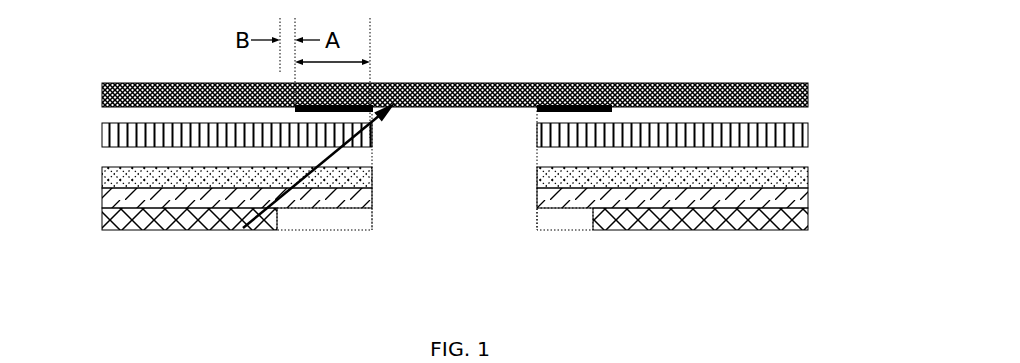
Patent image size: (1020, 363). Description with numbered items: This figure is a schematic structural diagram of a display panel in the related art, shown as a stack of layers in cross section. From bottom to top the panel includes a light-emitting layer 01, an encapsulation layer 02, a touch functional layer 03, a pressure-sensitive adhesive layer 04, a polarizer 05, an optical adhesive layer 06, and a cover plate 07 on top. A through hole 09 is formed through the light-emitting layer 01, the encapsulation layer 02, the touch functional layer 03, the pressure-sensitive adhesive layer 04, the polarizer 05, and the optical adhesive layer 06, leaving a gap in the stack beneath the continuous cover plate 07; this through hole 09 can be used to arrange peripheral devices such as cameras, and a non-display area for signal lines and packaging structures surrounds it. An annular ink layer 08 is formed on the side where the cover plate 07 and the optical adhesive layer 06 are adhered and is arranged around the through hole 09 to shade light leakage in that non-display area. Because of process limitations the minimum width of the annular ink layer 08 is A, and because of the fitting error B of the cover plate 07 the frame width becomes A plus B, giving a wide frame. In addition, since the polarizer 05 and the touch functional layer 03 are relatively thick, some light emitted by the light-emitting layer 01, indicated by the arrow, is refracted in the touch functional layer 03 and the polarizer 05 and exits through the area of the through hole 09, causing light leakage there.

The light-emitting layer 01 is at (800, 217).
The encapsulation layer 02 is at (106, 197).
The touch functional layer 03 is at (800, 175).
The pressure-sensitive adhesive layer 04 is at (104, 155).
The polarizer 05 is at (800, 137).
The optical adhesive layer 06 is at (104, 108).
The cover plate 07 is at (418, 85).
The annular ink layer 08 is at (580, 105).
The through hole 09 is at (446, 171).